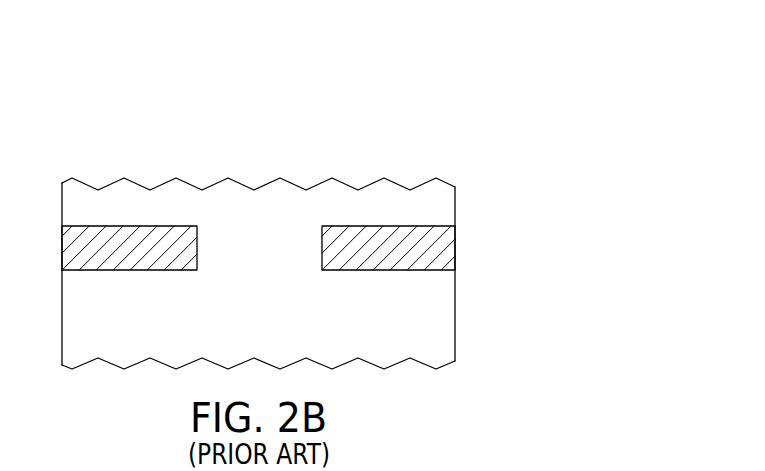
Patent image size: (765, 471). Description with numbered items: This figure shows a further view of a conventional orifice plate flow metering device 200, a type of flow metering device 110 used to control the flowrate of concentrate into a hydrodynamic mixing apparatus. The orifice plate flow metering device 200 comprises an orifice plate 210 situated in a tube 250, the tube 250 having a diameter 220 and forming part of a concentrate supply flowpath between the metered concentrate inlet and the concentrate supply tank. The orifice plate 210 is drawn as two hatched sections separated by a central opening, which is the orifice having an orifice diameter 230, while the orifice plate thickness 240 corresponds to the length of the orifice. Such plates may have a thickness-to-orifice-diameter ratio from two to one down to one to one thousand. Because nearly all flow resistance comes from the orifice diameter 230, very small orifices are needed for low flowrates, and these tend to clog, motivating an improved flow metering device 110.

The flow metering device 110 is at (452, 110).
The orifice plate flow metering device 200 is at (518, 140).
The orifice plate 210 is at (128, 270).
The diameter 220 is at (455, 172).
The orifice diameter 230 is at (322, 282).
The orifice plate thickness 240 is at (463, 223).
The tube 250 is at (455, 331).